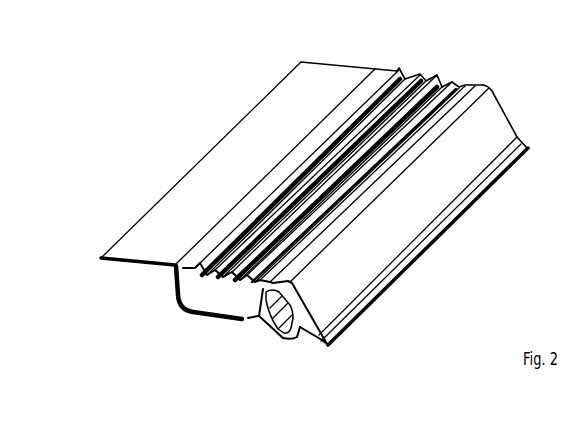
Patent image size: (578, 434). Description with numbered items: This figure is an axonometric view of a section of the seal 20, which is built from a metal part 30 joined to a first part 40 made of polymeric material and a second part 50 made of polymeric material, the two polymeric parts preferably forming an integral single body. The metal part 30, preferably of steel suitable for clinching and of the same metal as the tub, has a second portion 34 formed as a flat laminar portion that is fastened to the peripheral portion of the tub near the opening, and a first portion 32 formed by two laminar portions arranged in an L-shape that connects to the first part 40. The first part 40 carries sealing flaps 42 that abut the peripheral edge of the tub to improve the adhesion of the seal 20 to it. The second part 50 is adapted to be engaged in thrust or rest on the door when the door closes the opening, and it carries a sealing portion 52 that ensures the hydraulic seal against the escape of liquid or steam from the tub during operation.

The seal 20 is at (106, 86).
The metal part 30 is at (209, 67).
The first portion 32 is at (180, 293).
The second portion 34 is at (158, 225).
The first part 40 is at (213, 361).
The sealing flaps 42 is at (435, 44).
The second part 50 is at (278, 361).
The sealing portion 52 is at (417, 240).